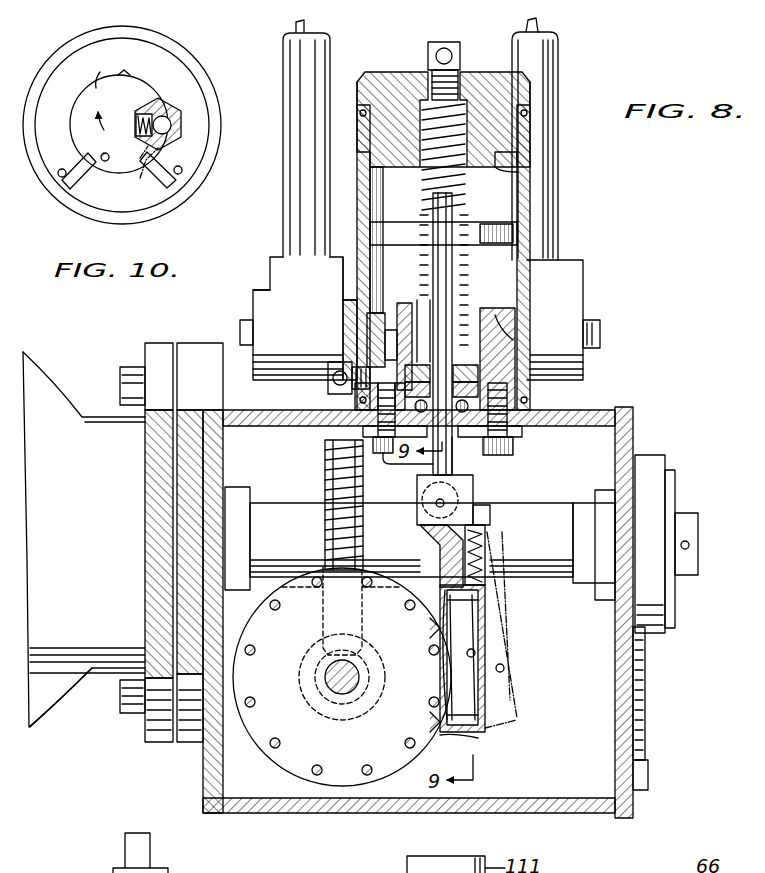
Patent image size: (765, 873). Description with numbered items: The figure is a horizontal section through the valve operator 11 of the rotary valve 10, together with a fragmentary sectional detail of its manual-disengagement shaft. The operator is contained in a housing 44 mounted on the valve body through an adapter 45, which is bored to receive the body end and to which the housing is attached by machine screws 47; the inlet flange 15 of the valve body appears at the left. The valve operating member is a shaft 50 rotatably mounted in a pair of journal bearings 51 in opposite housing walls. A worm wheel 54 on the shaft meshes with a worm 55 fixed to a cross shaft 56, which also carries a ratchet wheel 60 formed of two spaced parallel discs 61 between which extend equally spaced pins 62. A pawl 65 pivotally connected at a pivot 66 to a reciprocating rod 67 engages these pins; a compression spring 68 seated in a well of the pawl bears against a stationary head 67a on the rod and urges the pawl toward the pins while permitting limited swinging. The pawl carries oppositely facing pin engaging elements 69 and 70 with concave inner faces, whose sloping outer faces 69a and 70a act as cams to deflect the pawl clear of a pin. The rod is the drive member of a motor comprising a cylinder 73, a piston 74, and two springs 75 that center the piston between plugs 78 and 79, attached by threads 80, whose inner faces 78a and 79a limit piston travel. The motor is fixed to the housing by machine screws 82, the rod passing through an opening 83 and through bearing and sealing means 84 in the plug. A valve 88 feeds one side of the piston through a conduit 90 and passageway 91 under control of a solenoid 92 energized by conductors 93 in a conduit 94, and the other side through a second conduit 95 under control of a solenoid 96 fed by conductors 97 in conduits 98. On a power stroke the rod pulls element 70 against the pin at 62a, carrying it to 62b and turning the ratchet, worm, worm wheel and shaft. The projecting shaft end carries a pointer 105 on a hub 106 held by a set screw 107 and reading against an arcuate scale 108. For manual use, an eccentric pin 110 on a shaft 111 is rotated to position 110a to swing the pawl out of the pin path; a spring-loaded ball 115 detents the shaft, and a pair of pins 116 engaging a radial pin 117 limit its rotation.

In FIG. 8, the rotary valve 10 is at (56, 342).
In FIG. 8, the valve operator 11 is at (652, 405).
In FIG. 8, the flange 15 is at (52, 394).
In FIG. 8, the housing 44 is at (560, 812).
In FIG. 8, the adapter 45 is at (100, 655).
In FIG. 8, the machine screws 47 is at (122, 708).
In FIG. 8, the shaft 50 is at (411, 540).
In FIG. 8, the journal bearings 51 is at (238, 496).
In FIG. 8, the worm wheel 54 is at (325, 473).
In FIG. 8, the worm 55 is at (325, 688).
In FIG. 8, the cross shaft 56 is at (330, 712).
In FIG. 8, the ratchet wheel 60 is at (268, 757).
In FIG. 8, the discs 61 is at (344, 793).
In FIG. 8, the pins 62 is at (282, 608).
In FIG. 8, the ratchet pin 62a is at (428, 702).
In FIG. 8, the ratchet pin position 62b is at (430, 656).
In FIG. 8, the pawl 65 is at (492, 722).
In FIG. 8, the pivot 66 is at (450, 506).
In FIG. 8, the reciprocating rod 67 is at (458, 466).
In FIG. 8, the stationary head 67a is at (420, 493).
In FIG. 8, the compression spring 68 is at (485, 542).
In FIG. 8, the pin engaging element 69 is at (432, 638).
In FIG. 8, the outer face 69a is at (425, 626).
In FIG. 8, the pin engaging element 70 is at (438, 712).
In FIG. 8, the outer face 70a is at (440, 727).
In FIG. 8, the cylinder 73 is at (528, 207).
In FIG. 8, the piston 74 is at (517, 237).
In FIG. 8, the springs 75 is at (432, 188).
In FIG. 8, the plug 78 is at (372, 74).
In FIG. 8, the inner face 78a is at (520, 179).
In FIG. 8, the plug 79 is at (520, 397).
In FIG. 8, the inner face 79a is at (568, 278).
In FIG. 8, the threads 80 is at (530, 132).
In FIG. 8, the machine screws 82 is at (512, 448).
In FIG. 8, the opening 83 is at (382, 457).
In FIG. 8, the bearing and sealing means 84 is at (468, 356).
In FIG. 8, the valve 88 is at (355, 247).
In FIG. 8, the conduit 90 is at (330, 385).
In FIG. 8, the passageway 91 is at (392, 338).
In FIG. 8, the solenoid 92 is at (575, 338).
In FIG. 8, the electrical conductors 93 is at (545, 28).
In FIG. 8, the conduit 94 is at (558, 68).
In FIG. 8, the second conduit 95 is at (458, 44).
In FIG. 8, the solenoid 96 is at (298, 318).
In FIG. 8, the conductors 97 is at (305, 30).
In FIG. 8, the conduits 98 is at (283, 130).
In FIG. 8, the pointer 105 is at (648, 691).
In FIG. 8, the hub 106 is at (665, 483).
In FIG. 8, the set screw 107 is at (698, 543).
In FIG. 8, the arcuate scale 108 is at (648, 779).
In FIG. 10, the pin 110 is at (103, 165).
In FIG. 8, the pin 110 is at (480, 660).
In FIG. 10, the pin position 110a is at (144, 174).
In FIG. 8, the pin position 110a is at (506, 668).
In FIG. 10, the shaft 111 is at (97, 90).
In FIG. 10, the spring-loaded ball 115 is at (165, 103).
In FIG. 10, the pins 116 is at (57, 172).
In FIG. 10, the radially extending pin 117 is at (72, 182).